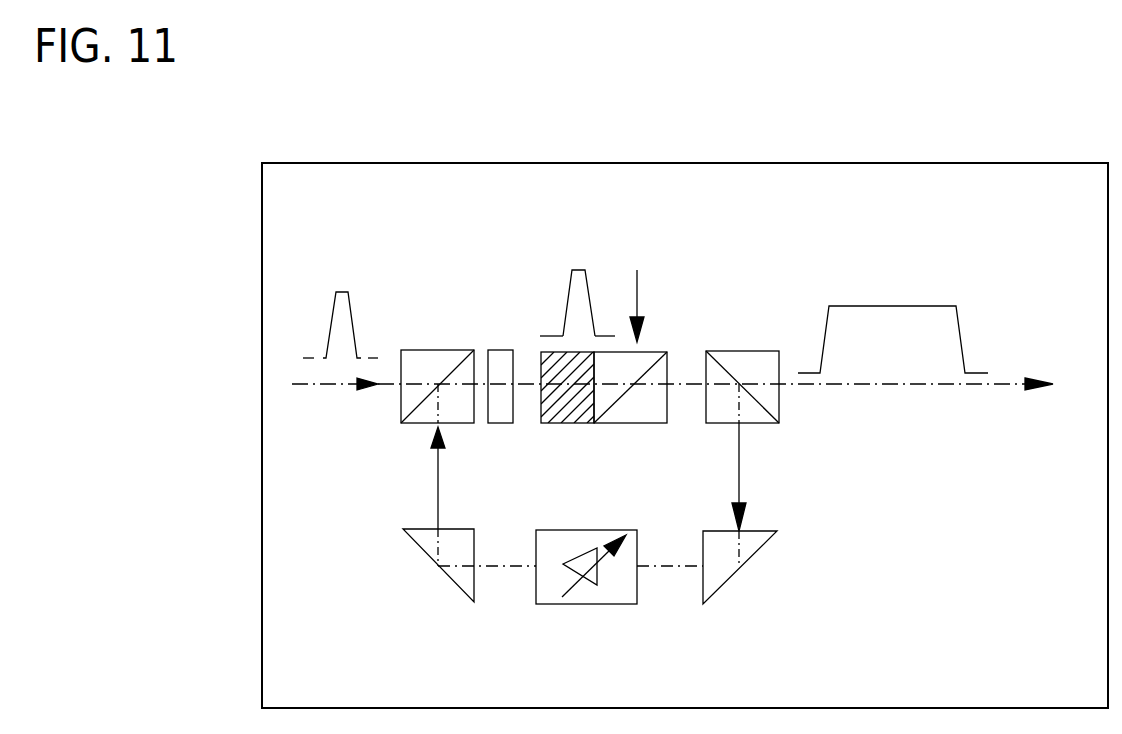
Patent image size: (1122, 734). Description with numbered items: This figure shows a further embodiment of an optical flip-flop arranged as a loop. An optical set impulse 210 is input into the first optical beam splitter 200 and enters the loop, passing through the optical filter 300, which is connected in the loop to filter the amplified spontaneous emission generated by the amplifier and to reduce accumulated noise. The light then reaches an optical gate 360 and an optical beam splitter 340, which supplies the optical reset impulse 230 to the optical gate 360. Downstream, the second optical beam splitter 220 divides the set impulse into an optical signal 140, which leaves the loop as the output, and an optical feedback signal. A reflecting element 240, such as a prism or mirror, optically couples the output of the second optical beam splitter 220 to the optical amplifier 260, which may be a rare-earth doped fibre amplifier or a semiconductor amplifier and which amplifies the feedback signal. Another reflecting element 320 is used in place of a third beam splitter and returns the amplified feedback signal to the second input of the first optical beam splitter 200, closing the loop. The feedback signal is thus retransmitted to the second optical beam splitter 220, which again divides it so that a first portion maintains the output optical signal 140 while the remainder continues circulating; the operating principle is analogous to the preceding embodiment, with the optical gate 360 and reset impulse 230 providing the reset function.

The optical set impulse 210 is at (338, 290).
The first optical beam splitter 200 is at (430, 350).
The optical filter 300 is at (499, 350).
The optical reset impulse 230 is at (578, 268).
The optical gate 360 is at (567, 425).
The optical beam splitter 340 is at (640, 425).
The second optical beam splitter 220 is at (736, 351).
The optical signal 140 is at (894, 306).
The reflecting element 320 is at (445, 578).
The optical amplifier 260 is at (587, 606).
The reflecting element 240 is at (730, 578).